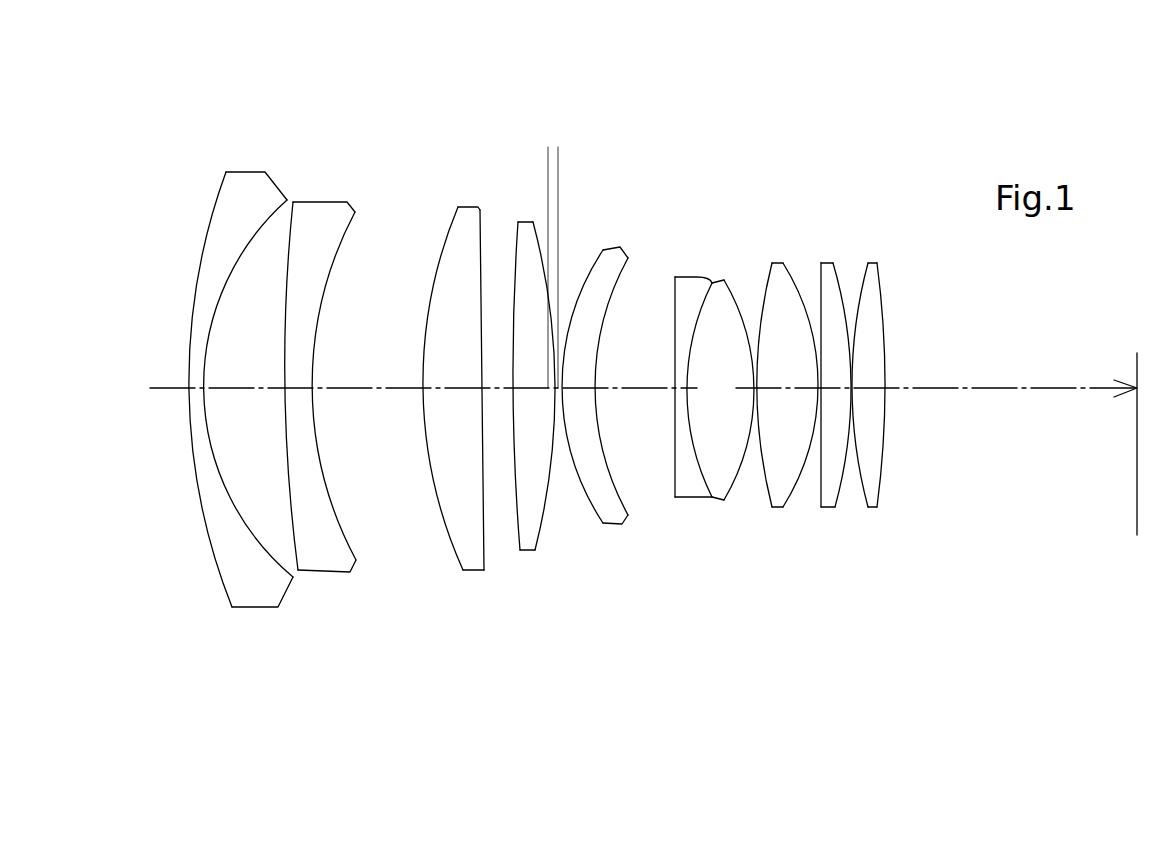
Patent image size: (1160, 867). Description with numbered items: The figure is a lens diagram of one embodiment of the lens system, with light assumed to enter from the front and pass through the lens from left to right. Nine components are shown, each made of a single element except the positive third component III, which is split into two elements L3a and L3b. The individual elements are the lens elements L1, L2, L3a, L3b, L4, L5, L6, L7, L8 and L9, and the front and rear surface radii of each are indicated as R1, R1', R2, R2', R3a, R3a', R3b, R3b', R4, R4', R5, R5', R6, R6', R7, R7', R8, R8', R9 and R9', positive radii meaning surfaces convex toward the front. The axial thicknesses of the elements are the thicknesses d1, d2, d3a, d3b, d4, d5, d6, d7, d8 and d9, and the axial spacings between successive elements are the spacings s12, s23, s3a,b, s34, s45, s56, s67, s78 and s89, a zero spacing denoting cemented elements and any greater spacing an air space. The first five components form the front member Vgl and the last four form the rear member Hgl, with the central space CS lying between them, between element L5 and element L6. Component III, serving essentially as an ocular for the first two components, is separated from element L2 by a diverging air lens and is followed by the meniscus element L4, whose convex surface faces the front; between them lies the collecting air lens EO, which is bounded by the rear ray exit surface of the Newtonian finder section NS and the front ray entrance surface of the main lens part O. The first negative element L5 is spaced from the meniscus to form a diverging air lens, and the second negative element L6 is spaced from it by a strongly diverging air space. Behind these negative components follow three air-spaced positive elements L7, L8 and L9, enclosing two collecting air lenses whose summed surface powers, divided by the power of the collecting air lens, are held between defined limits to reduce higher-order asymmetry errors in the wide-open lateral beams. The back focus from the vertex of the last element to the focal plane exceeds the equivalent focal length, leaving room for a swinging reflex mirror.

The lens element L1 is at (258, 588).
The lens element L2 is at (332, 560).
The lens element L3a is at (464, 560).
The lens element L3b is at (527, 560).
The lens element L4 is at (618, 513).
The lens element L5 is at (688, 497).
The lens element L6 is at (757, 500).
The lens element L7 is at (783, 507).
The lens element L8 is at (835, 507).
The lens element L9 is at (884, 636).
The front surface radius R1 is at (210, 362).
The rear surface radius R1' is at (248, 343).
The front surface radius R2 is at (304, 343).
The rear surface radius R2' is at (338, 336).
The front surface radius R3a is at (432, 370).
The rear surface radius R3a' is at (458, 345).
The front surface radius R3b is at (509, 351).
The rear surface radius R3b' is at (529, 324).
The front surface radius R4 is at (588, 354).
The rear surface radius R4' is at (618, 334).
The front surface radius R5 is at (660, 353).
The rear surface radius R5' is at (697, 344).
The front surface radius R6 is at (712, 220).
The rear surface radius R6' is at (742, 345).
The front surface radius R7 is at (771, 331).
The rear surface radius R7' is at (800, 341).
The front surface radius R8 is at (830, 323).
The rear surface radius R8' is at (847, 342).
The front surface radius R9 is at (892, 354).
The rear surface radius R9' is at (912, 376).
The axial thickness d1 is at (190, 382).
The axial thickness d2 is at (298, 388).
The axial thickness d3a is at (443, 388).
The axial thickness d3b is at (527, 388).
The axial thickness d4 is at (573, 388).
The axial thickness d5 is at (676, 377).
The axial thickness d6 is at (752, 381).
The axial thickness d7 is at (794, 388).
The axial thickness d8 is at (834, 388).
The axial thickness d9 is at (873, 388).
The axial spacing s12 is at (244, 392).
The axial spacing s23 is at (375, 392).
The axial spacing s3a,b is at (497, 392).
The axial spacing s34 is at (555, 392).
The axial spacing s45 is at (637, 393).
The axial spacing s56 is at (717, 400).
The axial spacing s67 is at (762, 394).
The axial spacing s78 is at (818, 396).
The axial spacing s89 is at (855, 400).
The Newtonian finder section NS is at (188, 310).
The main lens part O is at (887, 330).
The front member Vgl is at (717, 503).
The rear member Hgl is at (893, 463).
The collecting air lens EO is at (563, 463).
The central space CS is at (714, 389).
The third component III is at (552, 647).